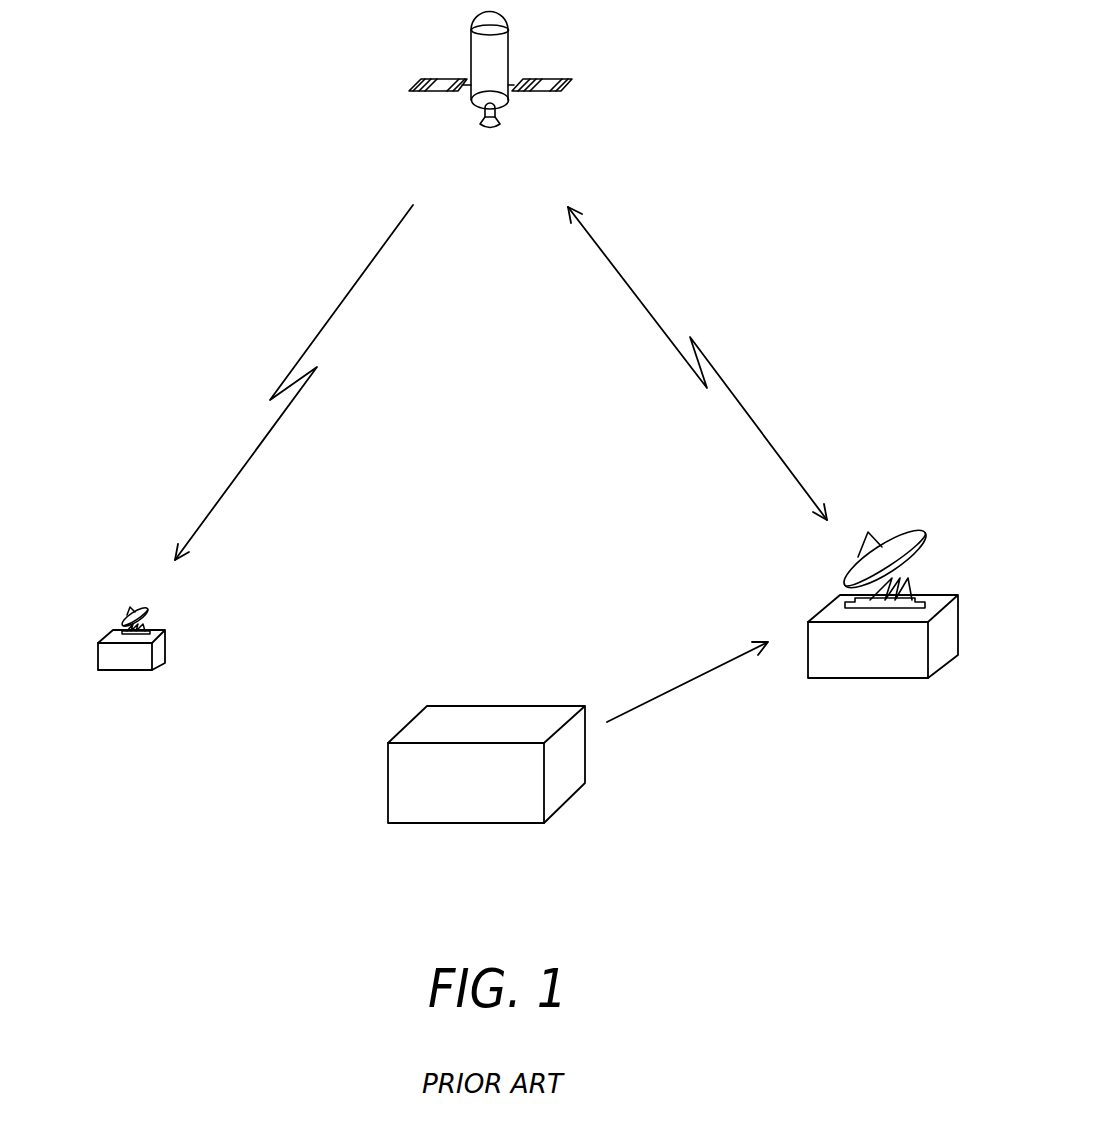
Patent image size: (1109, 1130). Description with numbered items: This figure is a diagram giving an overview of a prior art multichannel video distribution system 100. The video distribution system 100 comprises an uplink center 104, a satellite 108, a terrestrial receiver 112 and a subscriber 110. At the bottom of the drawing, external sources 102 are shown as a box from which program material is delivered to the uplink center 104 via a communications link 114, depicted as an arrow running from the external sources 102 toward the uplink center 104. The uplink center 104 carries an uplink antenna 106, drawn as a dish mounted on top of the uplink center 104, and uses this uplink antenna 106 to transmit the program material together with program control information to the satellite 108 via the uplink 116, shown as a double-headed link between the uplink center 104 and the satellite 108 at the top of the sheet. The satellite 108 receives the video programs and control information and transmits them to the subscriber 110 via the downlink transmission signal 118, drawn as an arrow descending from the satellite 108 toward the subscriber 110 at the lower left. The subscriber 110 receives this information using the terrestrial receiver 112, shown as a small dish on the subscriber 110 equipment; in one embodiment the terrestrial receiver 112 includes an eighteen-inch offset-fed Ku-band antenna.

The multichannel video distribution system 100 is at (812, 218).
The external sources 102 is at (558, 807).
The uplink center 104 is at (863, 678).
The uplink antenna 106 is at (923, 541).
The satellite 108 is at (538, 92).
The subscriber 110 is at (167, 632).
The terrestrial receiver 112 is at (130, 607).
The communications link 114 is at (683, 681).
The uplink 116 is at (747, 410).
The downlink transmission signal 118 is at (343, 300).